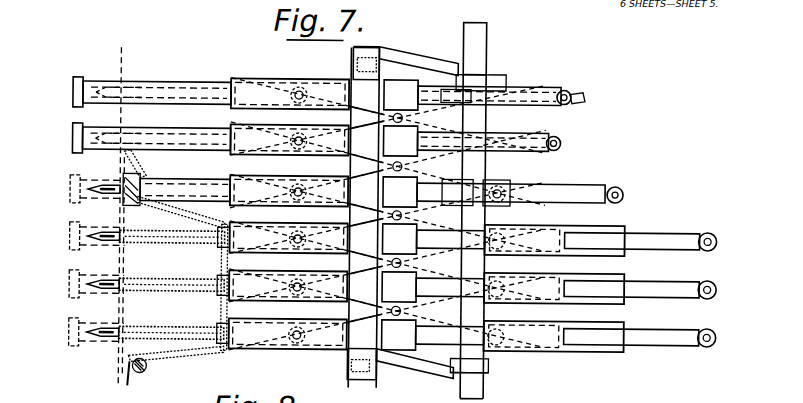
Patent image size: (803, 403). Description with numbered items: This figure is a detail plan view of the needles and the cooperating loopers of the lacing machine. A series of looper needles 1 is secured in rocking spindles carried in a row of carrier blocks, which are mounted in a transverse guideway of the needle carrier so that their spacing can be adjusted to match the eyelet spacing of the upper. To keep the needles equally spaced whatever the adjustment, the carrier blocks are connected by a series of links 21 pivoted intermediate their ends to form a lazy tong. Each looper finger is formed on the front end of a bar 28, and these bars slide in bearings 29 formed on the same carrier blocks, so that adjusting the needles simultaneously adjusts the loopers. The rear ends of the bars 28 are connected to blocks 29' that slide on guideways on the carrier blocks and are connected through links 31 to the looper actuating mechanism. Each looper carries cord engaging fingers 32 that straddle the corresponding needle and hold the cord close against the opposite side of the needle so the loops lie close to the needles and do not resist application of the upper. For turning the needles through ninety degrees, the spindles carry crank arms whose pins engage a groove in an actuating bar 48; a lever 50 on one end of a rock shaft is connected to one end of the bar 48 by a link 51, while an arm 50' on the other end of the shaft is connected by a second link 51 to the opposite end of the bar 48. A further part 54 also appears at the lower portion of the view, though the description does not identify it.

The looper needle 1 is at (94, 201).
The links 21 is at (353, 107).
The bar 28 is at (191, 122).
The bearing 29 is at (277, 192).
The block 29' is at (565, 305).
The link 31 is at (603, 210).
The cord engaging finger 32 is at (67, 110).
The actuating bar 48 is at (341, 362).
The lever 50 is at (464, 211).
The arm 50' is at (492, 388).
The link 51 is at (346, 64).
The foot 54 is at (480, 380).